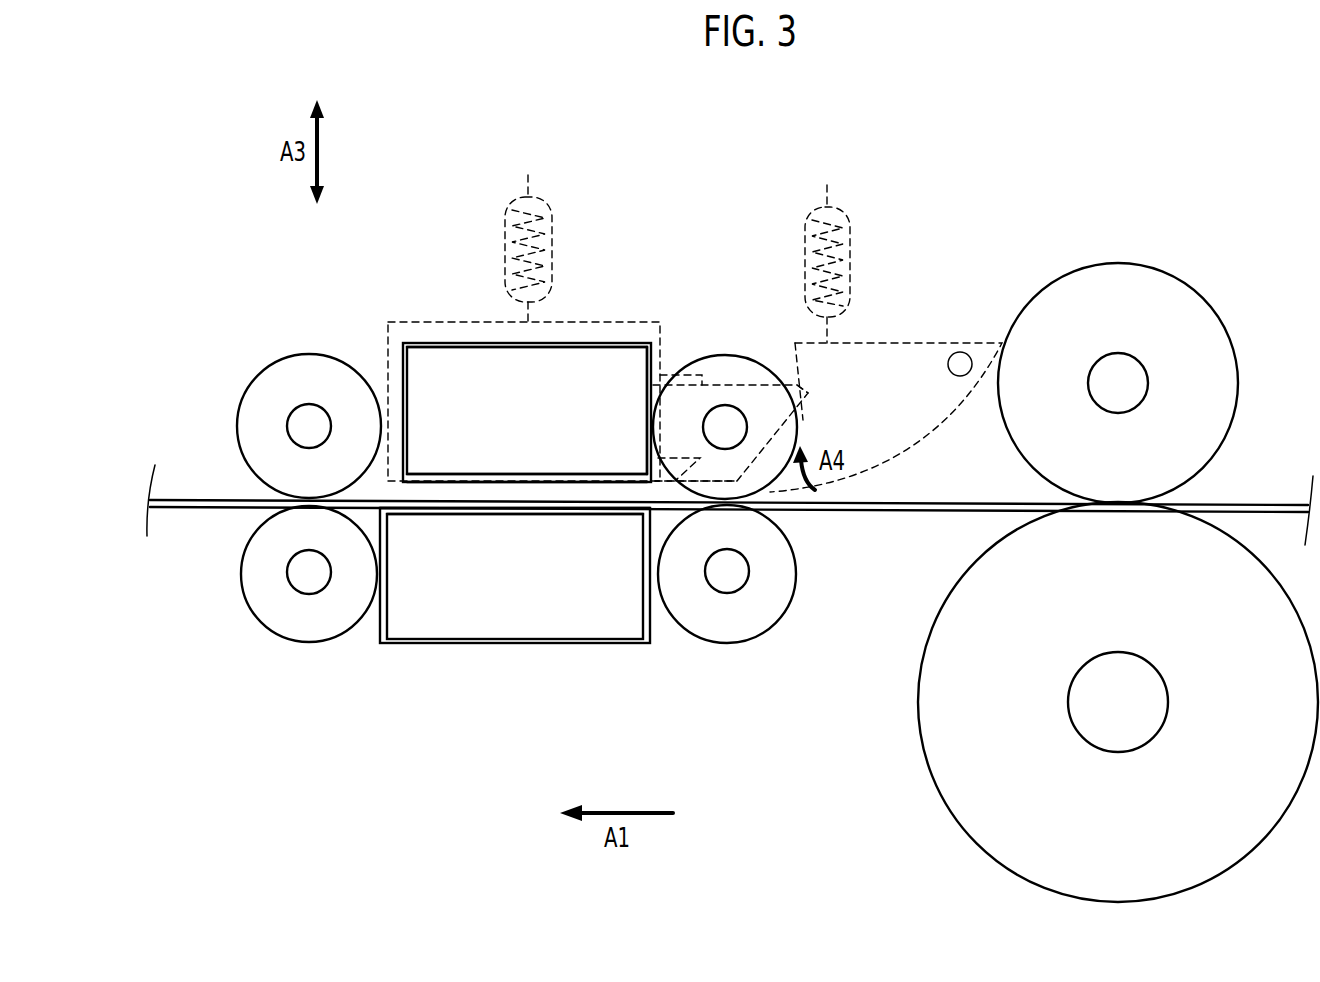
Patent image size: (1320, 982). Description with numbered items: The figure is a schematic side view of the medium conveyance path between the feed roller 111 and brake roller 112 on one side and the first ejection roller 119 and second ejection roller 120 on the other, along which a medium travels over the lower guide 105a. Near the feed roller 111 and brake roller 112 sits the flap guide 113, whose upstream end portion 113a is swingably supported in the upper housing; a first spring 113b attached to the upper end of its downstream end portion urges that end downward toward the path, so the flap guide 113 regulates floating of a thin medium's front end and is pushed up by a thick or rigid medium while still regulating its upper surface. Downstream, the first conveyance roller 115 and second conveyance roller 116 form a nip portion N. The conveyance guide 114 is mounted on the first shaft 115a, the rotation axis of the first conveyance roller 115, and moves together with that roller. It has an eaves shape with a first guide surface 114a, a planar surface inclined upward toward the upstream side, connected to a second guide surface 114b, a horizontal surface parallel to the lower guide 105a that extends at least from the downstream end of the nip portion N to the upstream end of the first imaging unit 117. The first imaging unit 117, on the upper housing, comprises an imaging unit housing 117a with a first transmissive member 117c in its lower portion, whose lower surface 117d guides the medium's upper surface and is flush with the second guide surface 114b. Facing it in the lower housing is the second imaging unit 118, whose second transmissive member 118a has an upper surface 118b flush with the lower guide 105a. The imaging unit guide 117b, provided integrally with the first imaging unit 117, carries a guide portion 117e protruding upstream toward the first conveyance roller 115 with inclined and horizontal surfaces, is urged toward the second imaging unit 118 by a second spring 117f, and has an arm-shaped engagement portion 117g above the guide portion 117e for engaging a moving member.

The lower guide 105a is at (953, 505).
The feed roller 111 is at (973, 842).
The brake roller 112 is at (1118, 263).
The flap guide 113 is at (903, 343).
The upstream end portion 113a is at (960, 352).
The first spring 113b is at (838, 207).
The conveyance guide 114 is at (758, 386).
The first guide surface 114a is at (795, 424).
The second guide surface 114b is at (700, 470).
The first conveyance roller 115 is at (752, 360).
The first shaft 115a is at (725, 430).
The second conveyance roller 116 is at (767, 630).
The first imaging unit 117 is at (468, 322).
The imaging unit housing 117a is at (420, 343).
The imaging unit guide 117b is at (612, 330).
The first transmissive member 117c is at (449, 473).
The lower surface 117d is at (553, 480).
The guide portion 117e is at (657, 470).
The second spring 117f is at (537, 192).
The engagement portion 117g is at (668, 375).
The second imaging unit 118 is at (488, 643).
The second transmissive member 118a is at (445, 512).
The upper surface 118b is at (525, 512).
The first ejection roller 119 is at (262, 372).
The second ejection roller 120 is at (310, 643).
The nip portion N is at (728, 510).